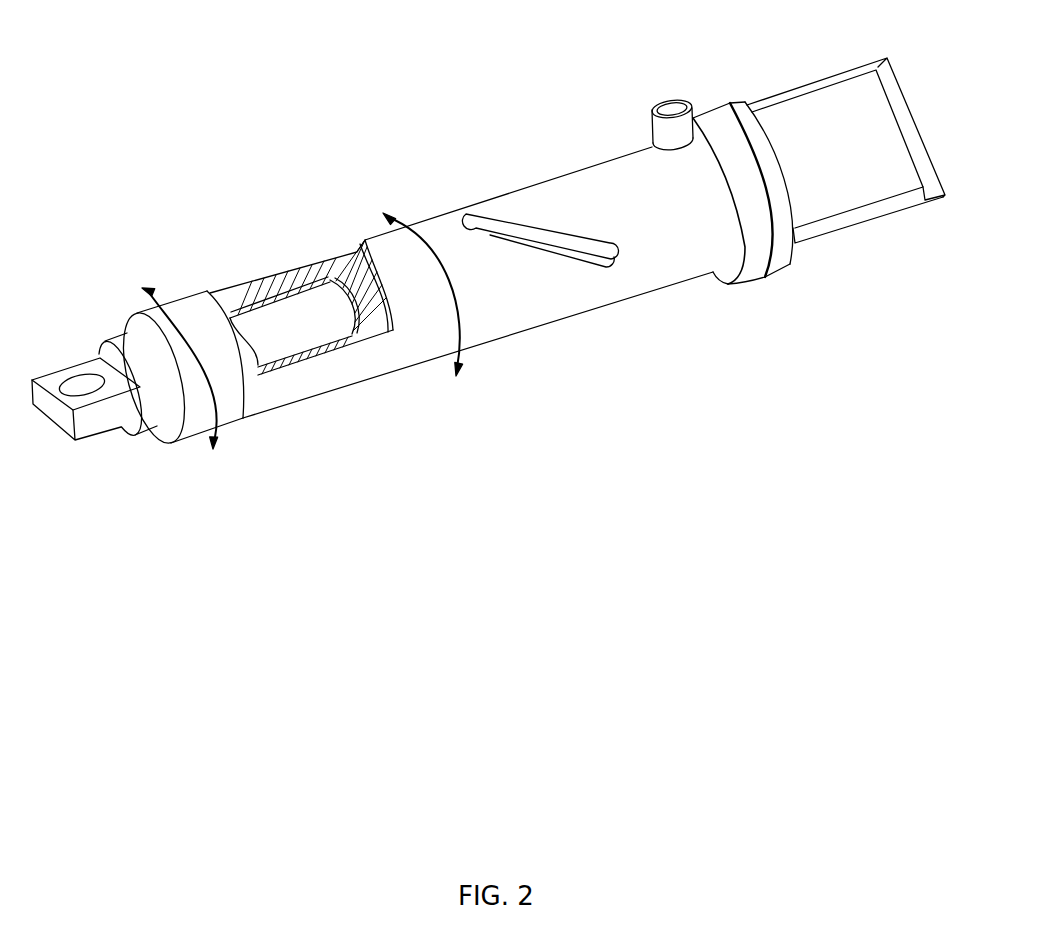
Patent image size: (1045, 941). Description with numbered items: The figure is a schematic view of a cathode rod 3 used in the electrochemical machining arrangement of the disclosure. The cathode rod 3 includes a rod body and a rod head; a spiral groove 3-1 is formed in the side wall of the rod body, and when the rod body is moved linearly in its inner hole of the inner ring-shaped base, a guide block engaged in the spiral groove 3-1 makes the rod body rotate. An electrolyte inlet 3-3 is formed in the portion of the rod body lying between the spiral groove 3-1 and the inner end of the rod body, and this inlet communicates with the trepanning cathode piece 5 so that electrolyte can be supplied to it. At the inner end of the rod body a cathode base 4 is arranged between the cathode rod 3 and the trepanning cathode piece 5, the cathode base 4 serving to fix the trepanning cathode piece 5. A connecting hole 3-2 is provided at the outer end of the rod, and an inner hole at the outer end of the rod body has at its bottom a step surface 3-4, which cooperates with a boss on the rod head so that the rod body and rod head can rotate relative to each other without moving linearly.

The cathode rod 3 is at (623, 207).
The spiral groove 3-1 is at (535, 228).
The connecting hole 3-2 is at (81, 383).
The electrolyte inlet 3-3 is at (665, 110).
The step surface 3-4 is at (357, 297).
The cathode base 4 is at (800, 118).
The trepanning cathode piece 5 is at (886, 83).